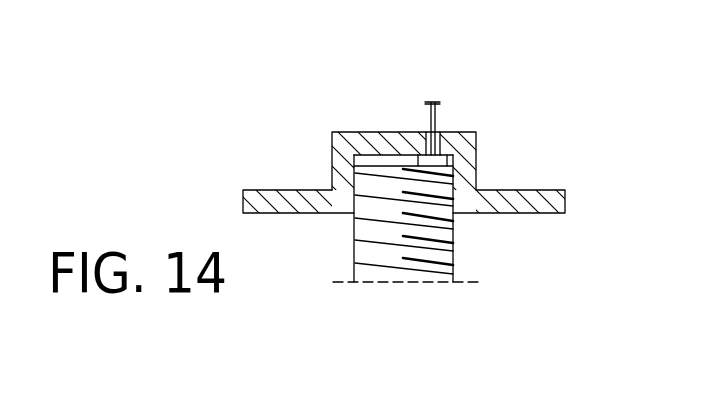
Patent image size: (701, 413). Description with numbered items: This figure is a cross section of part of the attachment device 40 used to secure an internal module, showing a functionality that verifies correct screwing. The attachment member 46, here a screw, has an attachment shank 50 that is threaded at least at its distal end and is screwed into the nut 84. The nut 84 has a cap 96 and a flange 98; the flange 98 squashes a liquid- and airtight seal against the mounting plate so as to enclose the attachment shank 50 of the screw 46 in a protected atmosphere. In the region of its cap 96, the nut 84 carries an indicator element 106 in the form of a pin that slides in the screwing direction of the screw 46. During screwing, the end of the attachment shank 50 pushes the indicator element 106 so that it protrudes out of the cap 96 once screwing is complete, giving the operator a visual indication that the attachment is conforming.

The attachment device 40 is at (333, 176).
The nut 84 is at (354, 130).
The cap 96 is at (393, 140).
The indicator element 106 is at (438, 115).
The flange 98 is at (525, 192).
The attachment member 46 is at (354, 232).
The attachment shank 50 is at (442, 248).